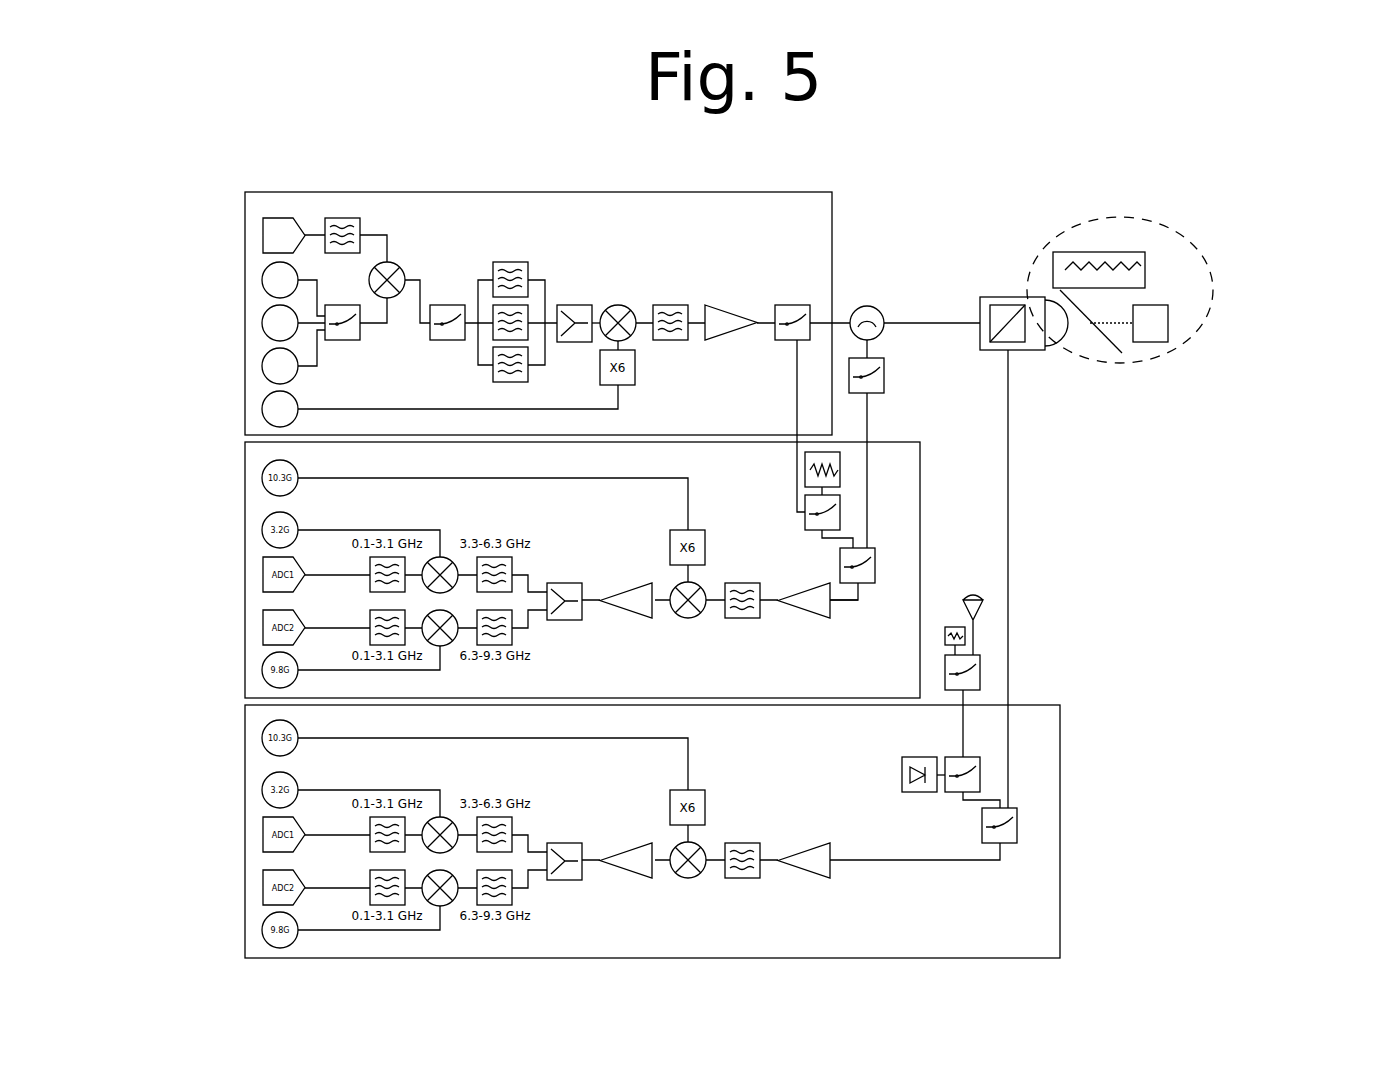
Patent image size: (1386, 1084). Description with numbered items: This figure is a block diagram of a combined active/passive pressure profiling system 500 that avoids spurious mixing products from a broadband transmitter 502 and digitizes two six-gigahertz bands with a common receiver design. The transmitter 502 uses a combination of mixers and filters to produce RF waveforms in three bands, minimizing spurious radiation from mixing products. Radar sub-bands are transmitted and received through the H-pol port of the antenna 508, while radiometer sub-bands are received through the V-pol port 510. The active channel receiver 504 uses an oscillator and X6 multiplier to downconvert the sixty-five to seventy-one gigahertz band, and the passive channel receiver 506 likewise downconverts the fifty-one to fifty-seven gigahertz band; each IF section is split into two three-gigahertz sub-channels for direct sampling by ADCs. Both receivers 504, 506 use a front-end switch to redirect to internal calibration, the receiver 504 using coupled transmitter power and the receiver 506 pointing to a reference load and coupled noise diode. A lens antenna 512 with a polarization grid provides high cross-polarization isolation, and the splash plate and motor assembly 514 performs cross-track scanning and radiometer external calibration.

The pressure profiling system 500 is at (1145, 160).
The broadband transmitter 502 is at (348, 194).
The active channel receiver 504 is at (245, 548).
The passive channel receiver 506 is at (245, 845).
The H-pol port of the antenna 508 is at (916, 345).
The V-pol port 510 is at (1028, 658).
The lens antenna 512 is at (1027, 297).
The splash plate and motor assembly 514 is at (1178, 352).